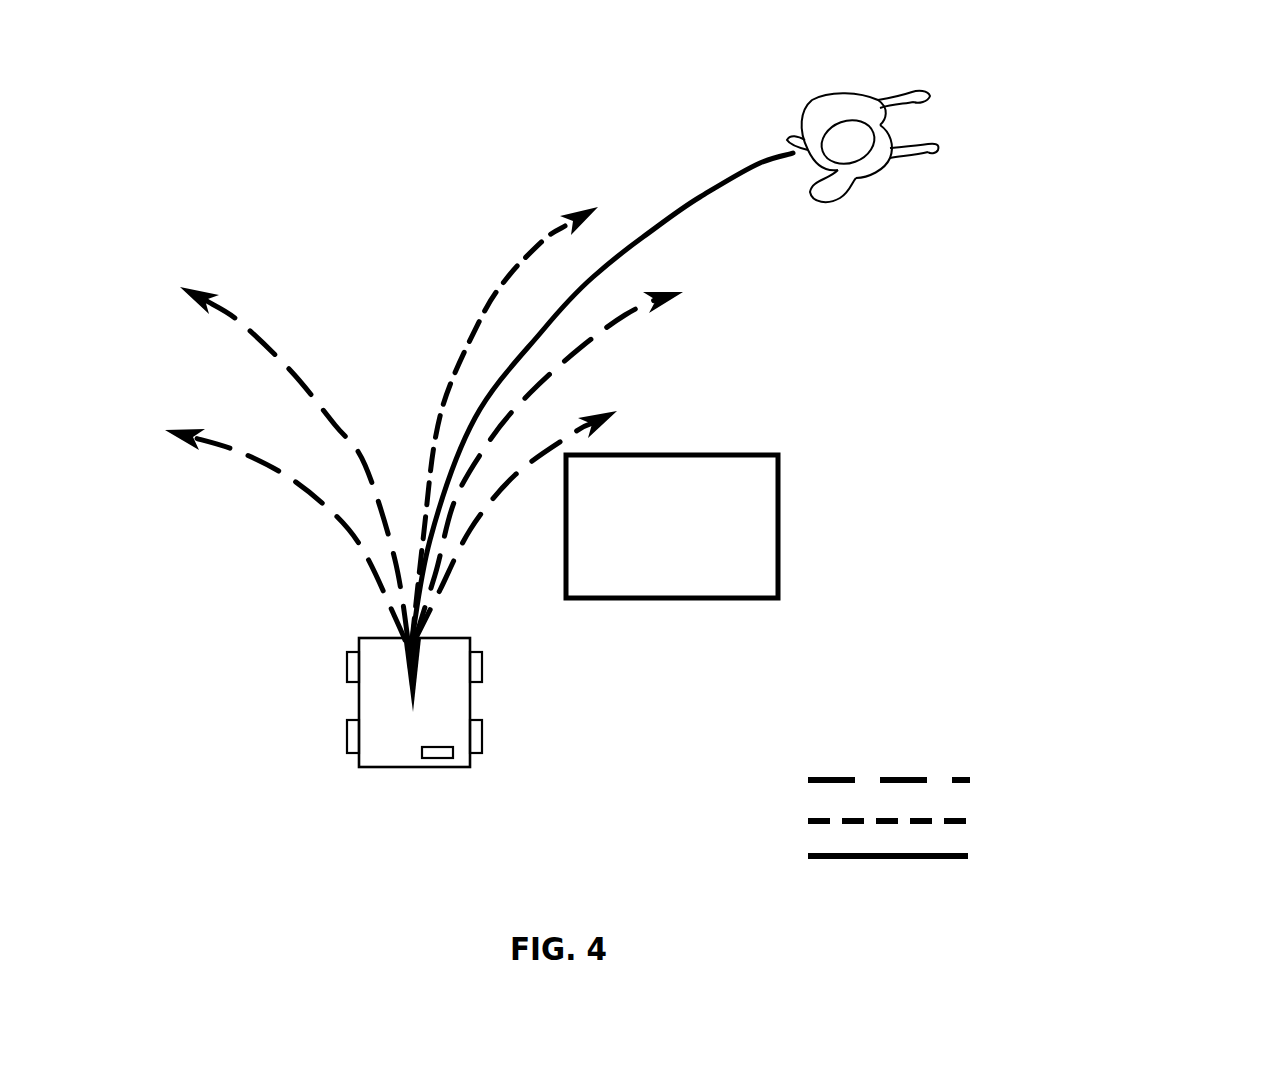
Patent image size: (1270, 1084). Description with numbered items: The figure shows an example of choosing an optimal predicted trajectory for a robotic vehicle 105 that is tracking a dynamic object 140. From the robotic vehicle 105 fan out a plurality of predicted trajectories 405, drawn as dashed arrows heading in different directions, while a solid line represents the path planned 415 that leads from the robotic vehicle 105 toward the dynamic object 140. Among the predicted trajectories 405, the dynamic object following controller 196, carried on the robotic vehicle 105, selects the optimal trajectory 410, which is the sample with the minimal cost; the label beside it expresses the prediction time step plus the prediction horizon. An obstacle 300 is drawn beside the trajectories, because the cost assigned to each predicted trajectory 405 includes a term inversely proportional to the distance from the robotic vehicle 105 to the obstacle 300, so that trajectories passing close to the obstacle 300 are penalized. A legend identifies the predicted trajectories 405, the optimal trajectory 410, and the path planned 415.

The robotic vehicle 105 is at (350, 651).
The dynamic object following controller 196 is at (431, 759).
The dynamic object 140 is at (838, 96).
The obstacle 300 is at (653, 552).
The predicted trajectories 405 is at (812, 780).
The optimal trajectory 410 is at (812, 821).
The path planned 415 is at (812, 856).